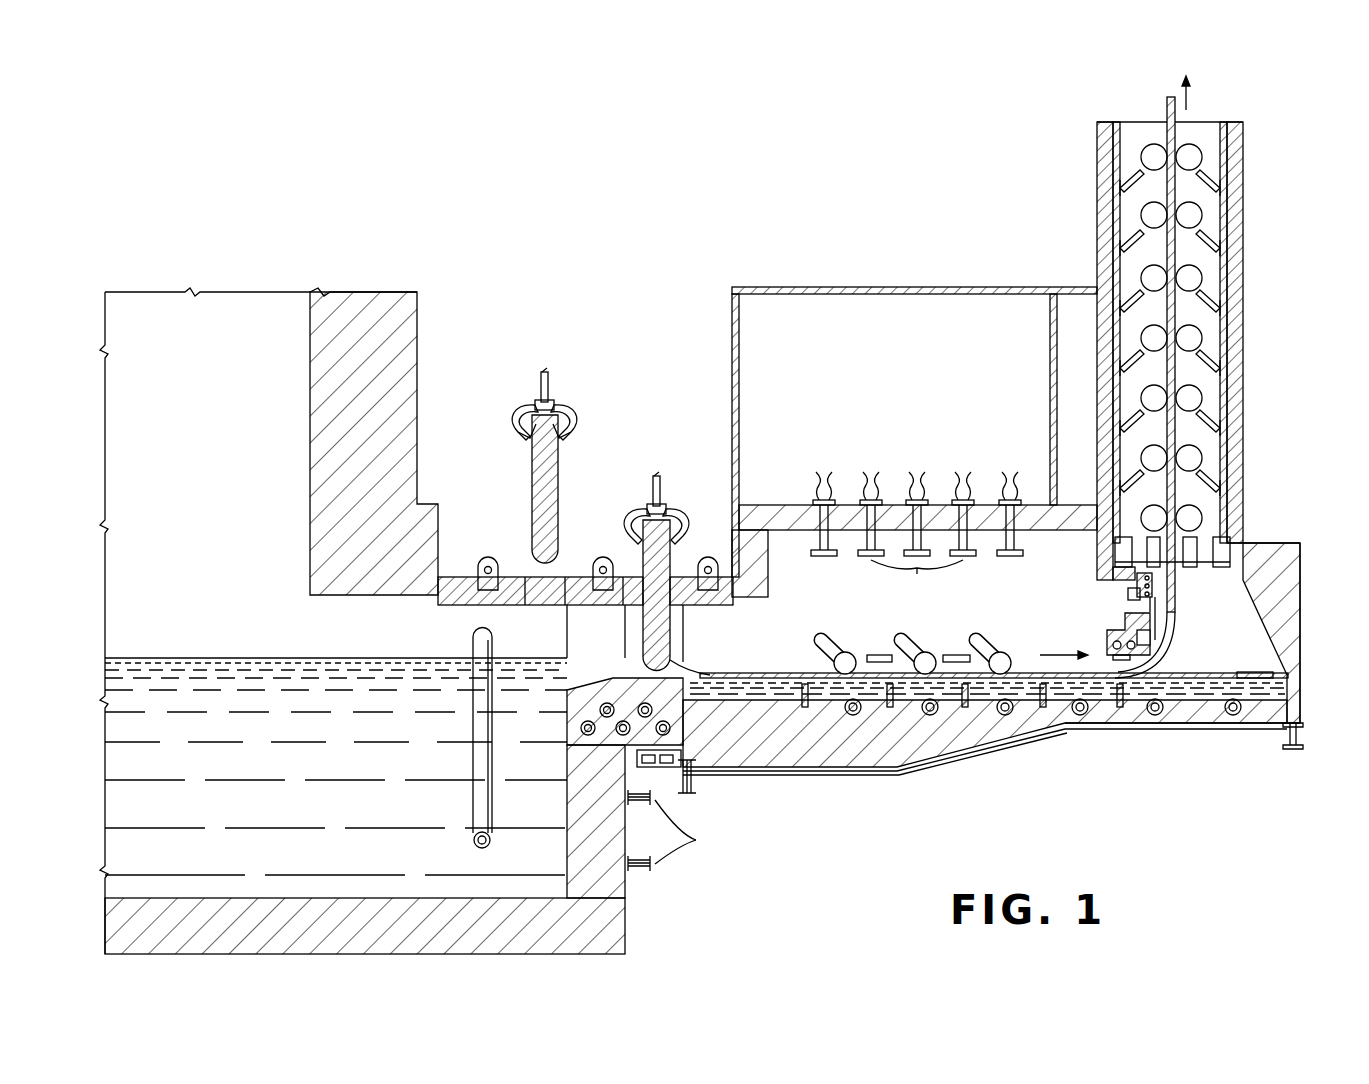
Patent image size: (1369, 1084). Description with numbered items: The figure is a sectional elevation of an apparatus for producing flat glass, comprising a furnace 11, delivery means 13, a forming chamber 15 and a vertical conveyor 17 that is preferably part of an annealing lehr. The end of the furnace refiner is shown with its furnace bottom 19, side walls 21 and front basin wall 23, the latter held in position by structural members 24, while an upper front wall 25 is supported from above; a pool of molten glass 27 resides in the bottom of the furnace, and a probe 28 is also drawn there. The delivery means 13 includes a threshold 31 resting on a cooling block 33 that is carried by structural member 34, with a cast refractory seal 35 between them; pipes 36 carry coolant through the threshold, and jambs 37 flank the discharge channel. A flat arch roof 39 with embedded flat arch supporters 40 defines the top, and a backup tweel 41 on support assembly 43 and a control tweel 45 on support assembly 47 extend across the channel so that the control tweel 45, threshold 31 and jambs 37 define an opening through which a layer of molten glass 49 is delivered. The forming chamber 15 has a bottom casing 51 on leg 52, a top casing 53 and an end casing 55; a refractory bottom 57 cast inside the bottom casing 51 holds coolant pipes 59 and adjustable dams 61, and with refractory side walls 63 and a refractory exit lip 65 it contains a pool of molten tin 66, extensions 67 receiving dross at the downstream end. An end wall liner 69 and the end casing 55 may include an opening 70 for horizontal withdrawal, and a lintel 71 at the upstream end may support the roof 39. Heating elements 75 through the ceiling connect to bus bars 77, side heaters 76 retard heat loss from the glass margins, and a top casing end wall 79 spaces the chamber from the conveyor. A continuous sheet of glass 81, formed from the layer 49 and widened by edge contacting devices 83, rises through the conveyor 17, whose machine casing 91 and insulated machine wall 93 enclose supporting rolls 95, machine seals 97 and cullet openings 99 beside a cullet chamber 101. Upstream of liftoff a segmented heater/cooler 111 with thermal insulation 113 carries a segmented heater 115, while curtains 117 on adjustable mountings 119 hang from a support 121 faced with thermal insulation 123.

The furnace 11 is at (445, 324).
The delivery means 13 is at (632, 328).
The forming chamber 15 is at (917, 268).
The vertical conveyor 17 is at (1072, 163).
The furnace bottom 19 is at (316, 950).
The side walls 21 is at (214, 502).
The front basin wall 23 is at (627, 839).
The structural members 24 is at (691, 832).
The upper front wall 25 is at (417, 408).
The pool of molten glass 27 is at (300, 817).
The probe 28 is at (473, 798).
The threshold 31 is at (567, 731).
The cooling block 33 is at (658, 770).
The structural member 34 is at (696, 790).
The cast refractory seal 35 is at (682, 752).
The conduits or pipes 36 is at (600, 708).
The jambs 37 is at (685, 633).
The roof 39 is at (511, 607).
The flat arch supporters 40 is at (488, 557).
The backup tweel 41 is at (557, 455).
The support assembly 43 is at (566, 404).
The control tweel 45 is at (672, 556).
The support assembly 47 is at (672, 502).
The layer of molten glass 49 is at (672, 668).
The bottom casing 51 is at (958, 752).
The support leg 52 is at (1303, 747).
The top casing 53 is at (732, 346).
The end casing 55 is at (1300, 577).
The refractory bottom 57 is at (995, 740).
The pipes 59 is at (1088, 713).
The dams or weirs 61 is at (897, 771).
The refractory side walls 63 is at (805, 665).
The refractory exit lip 65 is at (1290, 695).
The pool of molten metal 66 is at (1218, 716).
The extensions 67 is at (1248, 672).
The end wall liner 69 is at (1258, 612).
The opening 70 is at (1290, 648).
The lintel 71 is at (768, 590).
The heating elements 75 is at (917, 579).
The heaters 76 is at (878, 655).
The bus bars 77 is at (921, 500).
The top casing end wall 79 is at (1050, 395).
The continuous sheet of glass 81 is at (1167, 373).
The edge contacting devices 83 is at (972, 628).
The machine casing 91 is at (1225, 446).
The machine wall 93 is at (1245, 339).
The supporting rolls 95 is at (1148, 144).
The machine seals 97 is at (1235, 396).
The openings 99 is at (1097, 362).
The cullet chamber 101 is at (1096, 437).
The segmented heater/cooler 111 is at (1152, 638).
The thermal insulation 113 is at (1109, 630).
The segmented heater 115 is at (1142, 652).
The radiation shields or curtains 117 is at (1157, 608).
The adjustable mountings 119 is at (1152, 584).
The support 121 is at (1128, 596).
The thermal insulation 123 is at (1105, 569).